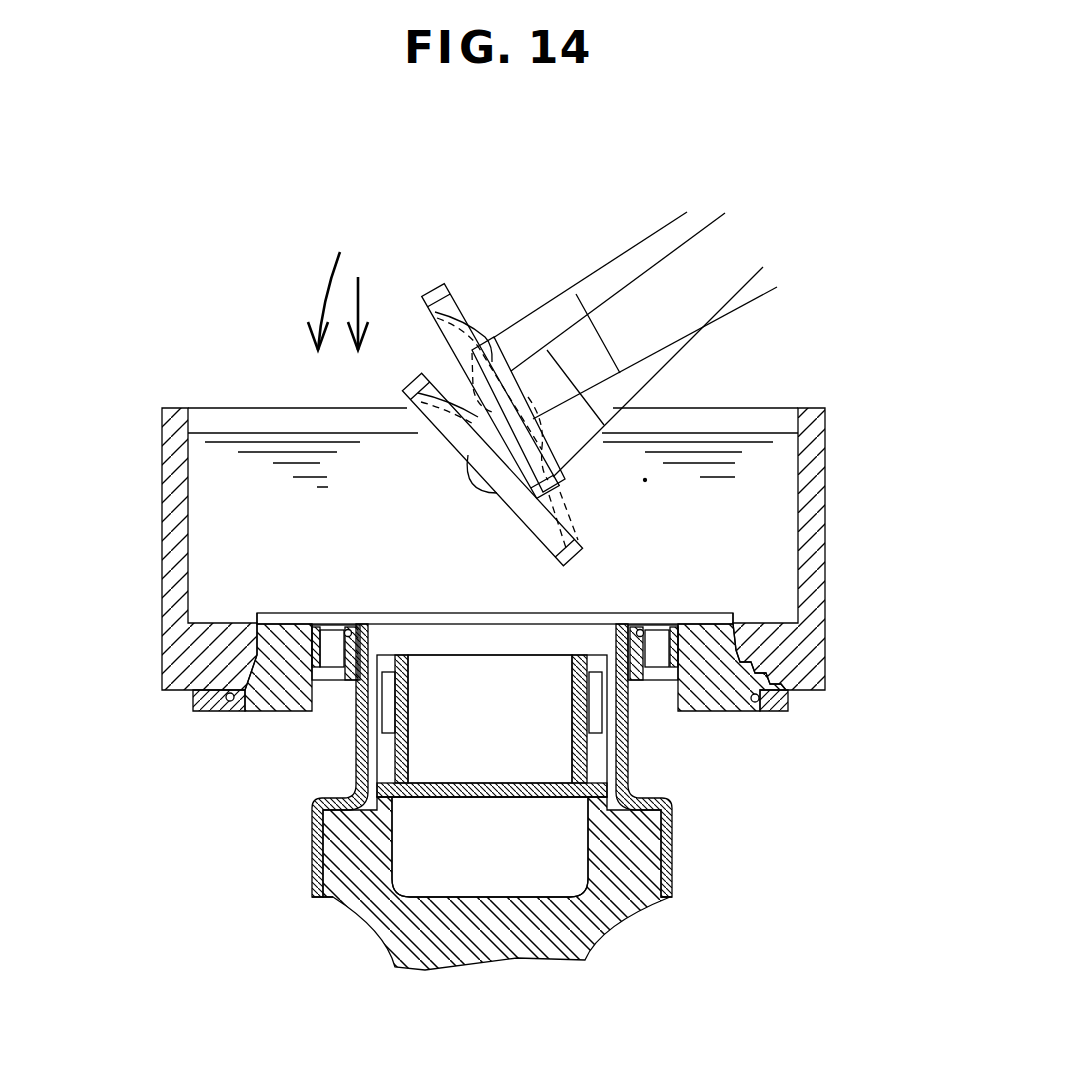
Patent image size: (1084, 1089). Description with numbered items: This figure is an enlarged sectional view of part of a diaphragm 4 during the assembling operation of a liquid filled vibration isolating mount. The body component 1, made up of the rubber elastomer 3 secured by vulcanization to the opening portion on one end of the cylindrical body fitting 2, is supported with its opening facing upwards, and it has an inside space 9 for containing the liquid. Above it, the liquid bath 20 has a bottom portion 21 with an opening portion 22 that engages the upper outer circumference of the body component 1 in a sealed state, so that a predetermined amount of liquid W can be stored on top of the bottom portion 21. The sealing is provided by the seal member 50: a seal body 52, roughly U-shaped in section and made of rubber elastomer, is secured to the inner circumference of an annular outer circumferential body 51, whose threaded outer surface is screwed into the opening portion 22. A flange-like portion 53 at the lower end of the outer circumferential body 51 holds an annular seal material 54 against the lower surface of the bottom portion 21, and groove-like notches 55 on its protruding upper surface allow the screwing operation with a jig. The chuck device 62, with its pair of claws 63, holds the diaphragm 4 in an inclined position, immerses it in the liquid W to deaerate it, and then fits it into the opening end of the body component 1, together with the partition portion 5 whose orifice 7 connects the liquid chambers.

The body component 1 is at (302, 861).
The cylindrical body fitting 2 is at (352, 727).
The rubber elastomer 3 is at (357, 875).
The diaphragm 4 is at (433, 287).
The partition portion 5 is at (517, 802).
The orifice 7 is at (383, 757).
The inside space 9 is at (543, 825).
The liquid bath 20 is at (828, 452).
The bottom portion 21 is at (758, 623).
The opening portion 22 is at (740, 615).
The seal member 50 is at (292, 568).
The outer circumferential body 51 is at (282, 650).
The seal body 52 is at (332, 628).
The flange-like portion 53 is at (777, 712).
The annular seal material 54 is at (753, 712).
The groove-like notches 55 is at (280, 616).
The chuck device 62 is at (680, 197).
The claws 63 is at (600, 285).
The liquid W is at (707, 448).